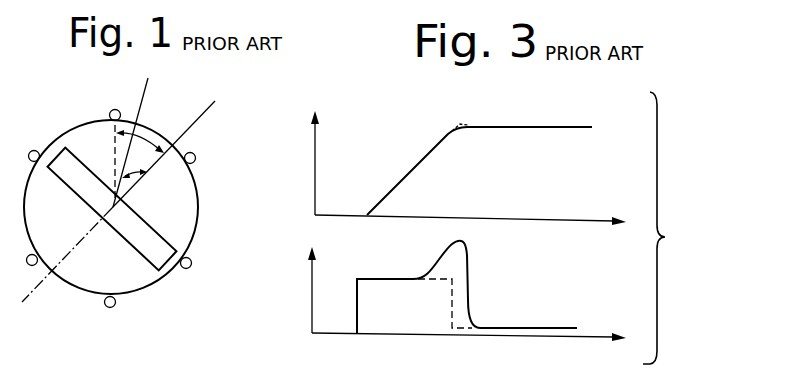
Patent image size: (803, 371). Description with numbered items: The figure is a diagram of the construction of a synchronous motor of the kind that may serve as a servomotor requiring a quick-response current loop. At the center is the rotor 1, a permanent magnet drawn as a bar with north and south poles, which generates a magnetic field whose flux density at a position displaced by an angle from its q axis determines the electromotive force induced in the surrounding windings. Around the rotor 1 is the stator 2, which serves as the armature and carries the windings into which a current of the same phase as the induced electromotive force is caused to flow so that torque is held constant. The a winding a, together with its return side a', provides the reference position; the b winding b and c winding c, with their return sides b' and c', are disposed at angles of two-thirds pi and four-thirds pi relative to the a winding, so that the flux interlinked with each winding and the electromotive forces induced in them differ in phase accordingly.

In FIG. 1, the rotor 1 is at (82, 158).
In FIG. 1, the stator 2 is at (108, 199).
In FIG. 1, the a winding a is at (115, 104).
In FIG. 3, the a winding a is at (450, 165).
In FIG. 1, the b winding b is at (199, 153).
In FIG. 3, the b winding b is at (444, 294).
In FIG. 1, the c winding c is at (192, 271).
In FIG. 1, the stator coil a' is at (108, 313).
In FIG. 1, the stator coil b' is at (21, 267).
In FIG. 1, the stator coil c' is at (26, 147).